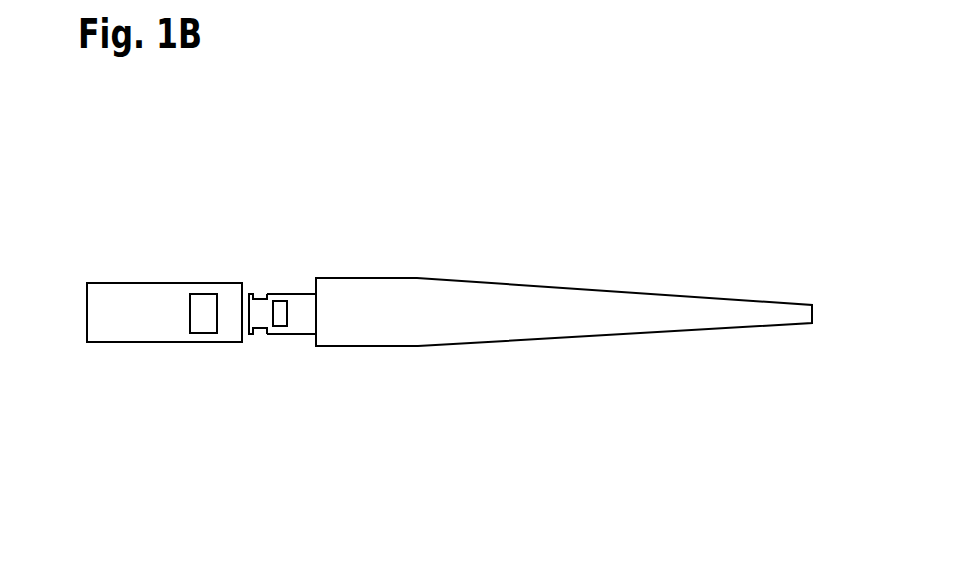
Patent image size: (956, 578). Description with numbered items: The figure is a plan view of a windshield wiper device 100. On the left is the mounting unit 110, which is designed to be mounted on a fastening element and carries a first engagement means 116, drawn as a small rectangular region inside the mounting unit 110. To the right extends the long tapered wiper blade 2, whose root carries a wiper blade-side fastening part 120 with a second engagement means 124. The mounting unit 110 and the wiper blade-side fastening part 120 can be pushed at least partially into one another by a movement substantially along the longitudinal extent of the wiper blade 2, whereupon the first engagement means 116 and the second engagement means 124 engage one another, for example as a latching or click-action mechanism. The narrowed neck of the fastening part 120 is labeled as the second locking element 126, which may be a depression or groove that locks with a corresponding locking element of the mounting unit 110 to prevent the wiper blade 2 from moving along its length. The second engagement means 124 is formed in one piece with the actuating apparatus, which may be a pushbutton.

The wiper blade 2 is at (614, 248).
The windshield wiper device 100 is at (97, 227).
The mounting unit 110 is at (178, 263).
The first engagement means 116 is at (207, 308).
The wiper blade-side fastening part 120 is at (286, 360).
The second engagement means 124 is at (280, 315).
The second locking element 126 is at (261, 297).